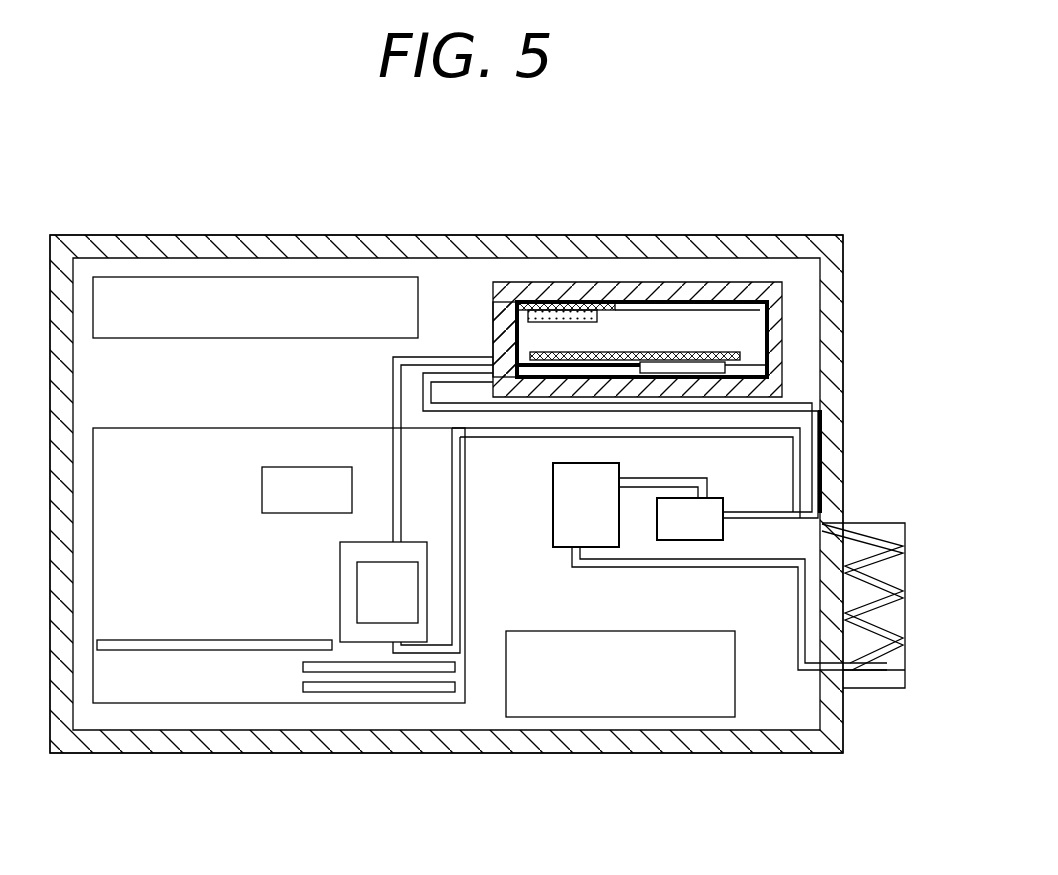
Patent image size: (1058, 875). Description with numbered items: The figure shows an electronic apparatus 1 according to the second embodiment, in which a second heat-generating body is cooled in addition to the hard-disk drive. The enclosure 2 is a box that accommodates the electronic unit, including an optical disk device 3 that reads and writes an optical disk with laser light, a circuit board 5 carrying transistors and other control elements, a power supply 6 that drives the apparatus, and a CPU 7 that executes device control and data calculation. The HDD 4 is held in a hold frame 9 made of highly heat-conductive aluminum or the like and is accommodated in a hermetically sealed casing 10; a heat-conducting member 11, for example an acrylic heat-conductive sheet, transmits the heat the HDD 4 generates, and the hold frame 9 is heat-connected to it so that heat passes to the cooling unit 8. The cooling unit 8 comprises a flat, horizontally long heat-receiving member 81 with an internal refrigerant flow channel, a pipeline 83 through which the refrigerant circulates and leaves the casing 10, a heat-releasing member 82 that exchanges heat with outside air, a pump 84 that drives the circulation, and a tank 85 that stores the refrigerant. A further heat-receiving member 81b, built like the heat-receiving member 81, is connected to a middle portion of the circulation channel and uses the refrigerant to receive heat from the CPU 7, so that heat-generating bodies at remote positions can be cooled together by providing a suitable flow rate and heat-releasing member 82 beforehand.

The electronic apparatus 1 is at (590, 182).
The enclosure 2 is at (262, 236).
The optical disk device 3 is at (160, 292).
The hard-disk drive (HDD) 4 is at (668, 330).
The circuit board 5 is at (164, 594).
The power supply 6 is at (543, 656).
The central processing unit (CPU) 7 is at (389, 594).
The cooling unit 8 is at (538, 471).
The hold frame 9 is at (495, 336).
The hermetically sealed casing 10 is at (625, 283).
The heat-conducting member 11 is at (557, 302).
The heat-receiving member 81 is at (695, 366).
The heat-receiving member 81b is at (358, 547).
The heat-releasing member 82 is at (905, 567).
The pipeline 83 is at (770, 567).
The pump 84 is at (705, 508).
The tank 85 is at (565, 515).